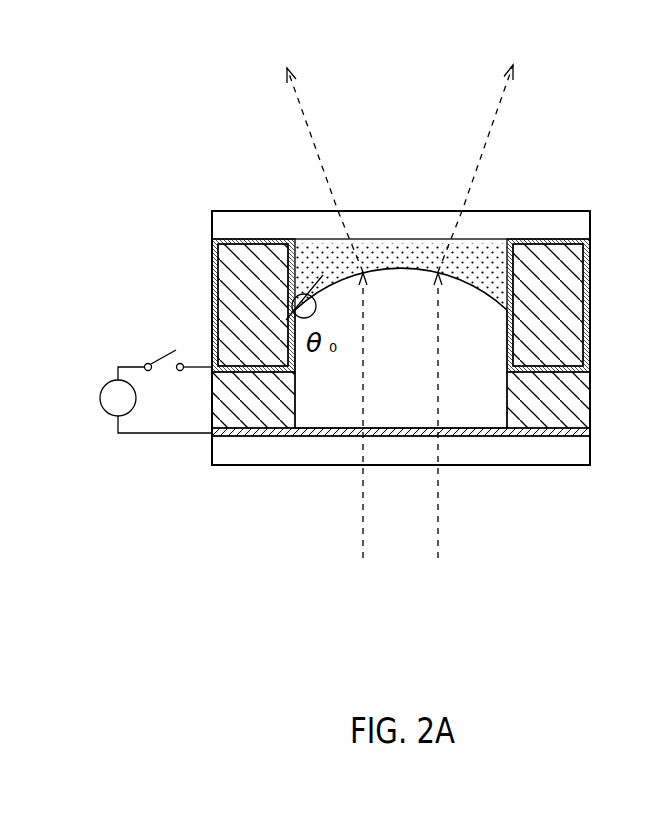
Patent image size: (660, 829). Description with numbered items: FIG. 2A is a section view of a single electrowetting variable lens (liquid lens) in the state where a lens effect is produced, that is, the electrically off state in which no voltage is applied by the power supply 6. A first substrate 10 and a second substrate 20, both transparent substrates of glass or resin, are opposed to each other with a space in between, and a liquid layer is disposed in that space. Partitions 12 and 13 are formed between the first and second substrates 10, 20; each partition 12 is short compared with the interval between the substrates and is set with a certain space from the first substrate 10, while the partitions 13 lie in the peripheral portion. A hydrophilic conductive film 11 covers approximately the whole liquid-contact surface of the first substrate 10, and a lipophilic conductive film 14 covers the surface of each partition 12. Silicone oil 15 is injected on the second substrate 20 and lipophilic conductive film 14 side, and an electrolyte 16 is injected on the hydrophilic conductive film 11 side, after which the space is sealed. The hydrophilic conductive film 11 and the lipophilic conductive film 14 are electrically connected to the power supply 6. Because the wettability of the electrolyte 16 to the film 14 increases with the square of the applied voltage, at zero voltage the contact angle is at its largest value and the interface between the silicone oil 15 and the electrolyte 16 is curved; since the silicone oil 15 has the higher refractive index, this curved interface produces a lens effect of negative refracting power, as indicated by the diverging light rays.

The power supply 6 is at (105, 383).
The first substrate 10 is at (578, 450).
The hydrophilic conductive film 11 is at (590, 432).
The partition 12 is at (566, 303).
The partition 13 is at (575, 397).
The lipophilic conductive film 14 is at (586, 274).
The silicone oil 15 is at (578, 246).
The electrolyte 16 is at (482, 330).
The second substrate 20 is at (590, 214).